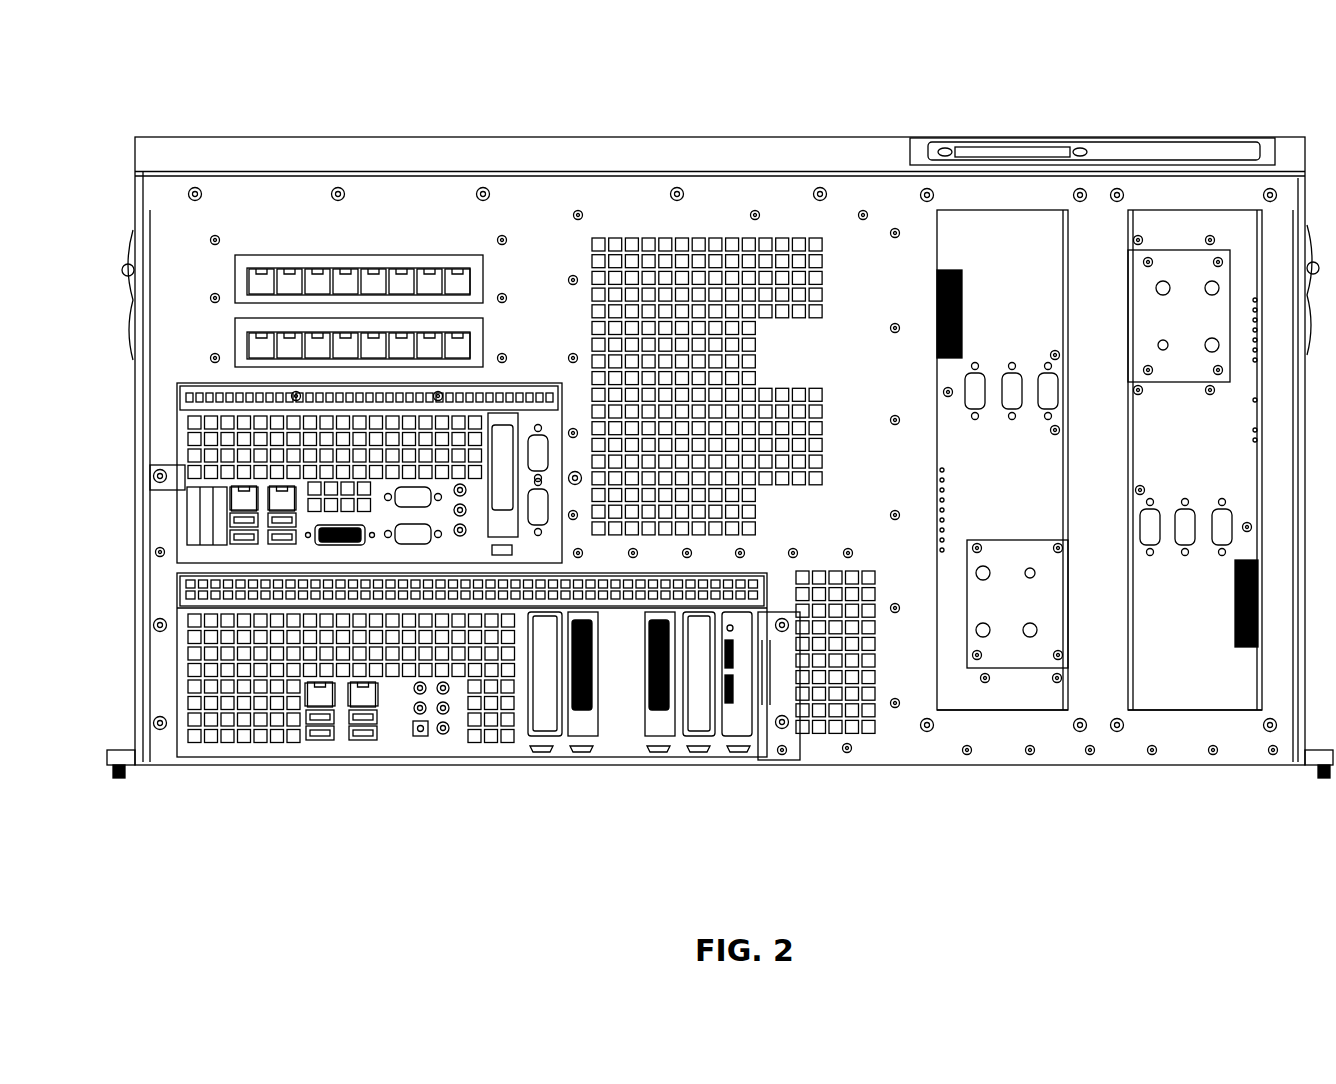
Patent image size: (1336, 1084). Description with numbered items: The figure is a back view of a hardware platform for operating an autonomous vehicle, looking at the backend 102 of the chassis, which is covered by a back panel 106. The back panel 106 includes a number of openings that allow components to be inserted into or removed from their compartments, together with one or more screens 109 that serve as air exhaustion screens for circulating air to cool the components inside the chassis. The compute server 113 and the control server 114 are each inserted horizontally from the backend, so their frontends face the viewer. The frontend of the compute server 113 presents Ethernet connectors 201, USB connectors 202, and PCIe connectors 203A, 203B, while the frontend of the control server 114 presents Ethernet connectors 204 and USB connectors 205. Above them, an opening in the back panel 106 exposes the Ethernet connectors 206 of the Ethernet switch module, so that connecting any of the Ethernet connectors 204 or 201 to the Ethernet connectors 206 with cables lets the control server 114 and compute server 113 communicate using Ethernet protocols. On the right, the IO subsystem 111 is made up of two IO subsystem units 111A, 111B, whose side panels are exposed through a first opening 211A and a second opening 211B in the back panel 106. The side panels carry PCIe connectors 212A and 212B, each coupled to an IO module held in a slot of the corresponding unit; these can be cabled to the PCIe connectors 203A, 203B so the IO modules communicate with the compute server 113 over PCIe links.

The backend 102 is at (720, 412).
The back panel 106 is at (908, 394).
The screen 109 is at (670, 238).
The IO subsystem 111 is at (1273, 125).
The IO subsystem unit 111A is at (1027, 246).
The IO subsystem unit 111B is at (1217, 694).
The compute server 113 is at (190, 752).
The control server 114 is at (195, 547).
The Ethernet connector 201 is at (383, 697).
The universal serial bus (USB) connector 202 is at (330, 740).
The PCIe connector 203A is at (588, 708).
The PCIe connector 203B is at (653, 710).
The Ethernet connector 204 is at (243, 494).
The USB connector 205 is at (240, 515).
The Ethernet connector 206 is at (340, 252).
The first opening 211A is at (1000, 710).
The second opening 211B is at (1205, 712).
The PCIe connector 212A is at (962, 318).
The PCIe connector 212B is at (1235, 585).